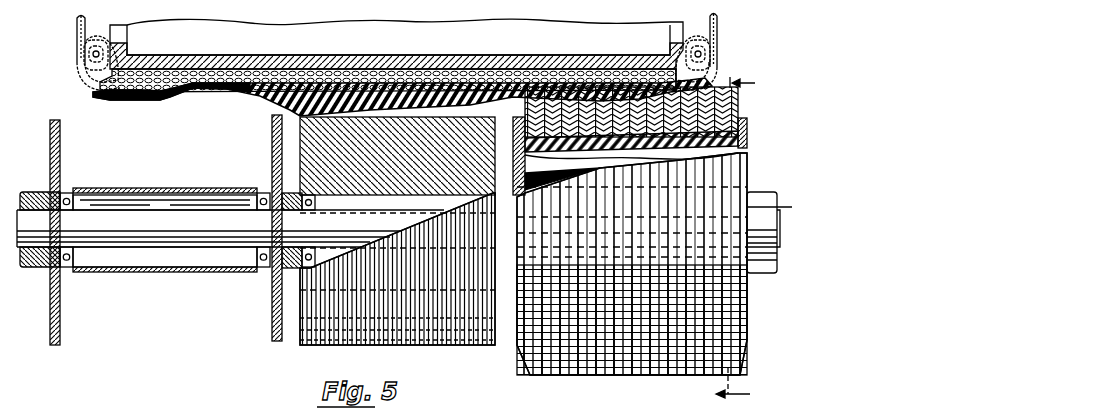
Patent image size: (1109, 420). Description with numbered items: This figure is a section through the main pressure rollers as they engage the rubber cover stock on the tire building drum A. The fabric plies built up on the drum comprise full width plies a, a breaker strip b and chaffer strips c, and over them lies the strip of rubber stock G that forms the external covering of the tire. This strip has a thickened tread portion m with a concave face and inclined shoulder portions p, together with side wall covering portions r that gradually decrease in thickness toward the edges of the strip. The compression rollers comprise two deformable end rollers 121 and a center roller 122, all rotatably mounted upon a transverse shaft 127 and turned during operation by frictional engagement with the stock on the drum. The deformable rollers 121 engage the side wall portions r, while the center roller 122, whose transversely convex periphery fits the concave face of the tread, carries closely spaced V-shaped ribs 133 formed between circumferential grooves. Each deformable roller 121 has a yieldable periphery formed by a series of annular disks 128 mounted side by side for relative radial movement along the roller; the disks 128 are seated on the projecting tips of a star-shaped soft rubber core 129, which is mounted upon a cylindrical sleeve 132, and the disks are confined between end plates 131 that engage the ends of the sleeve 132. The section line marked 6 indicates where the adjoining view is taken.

The drum A is at (247, 60).
The full width plies a is at (76, 26).
The chaffer strips c is at (76, 74).
The breaker strip b is at (458, 83).
The side wall covering portions r is at (216, 92).
The strip of rubber stock G is at (191, 96).
The thickened tread portion m is at (358, 132).
The inclined shoulder portions p is at (270, 115).
The end plates 131 is at (271, 308).
The soft rubber core 129 is at (742, 142).
The deformable end rollers 121 is at (757, 273).
The cylindrical sleeve 132 is at (92, 275).
The transverse shaft 127 is at (174, 262).
The V-shaped ribs 133 is at (358, 352).
The center roller 122 is at (300, 337).
The annular disks 128 is at (660, 378).
The section line 6- 6 is at (744, 239).